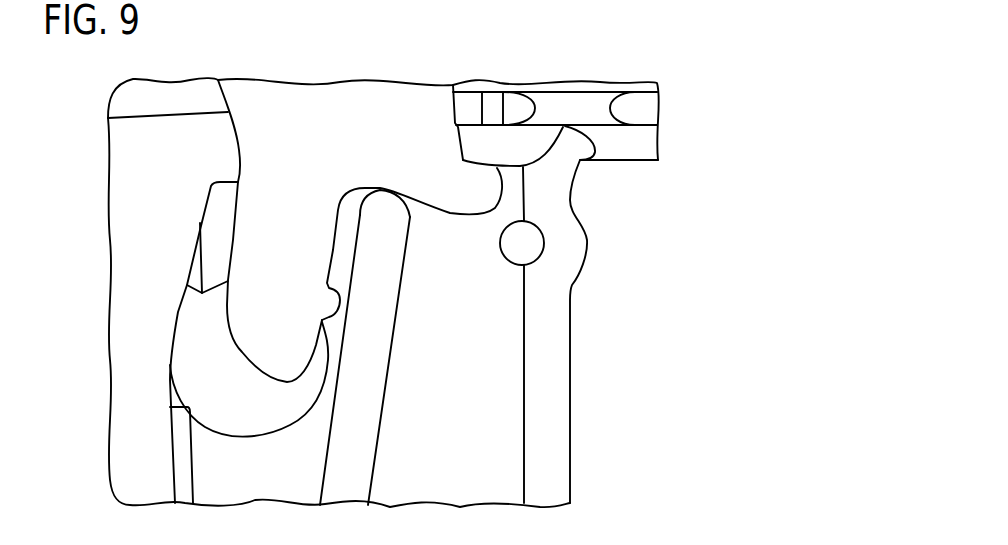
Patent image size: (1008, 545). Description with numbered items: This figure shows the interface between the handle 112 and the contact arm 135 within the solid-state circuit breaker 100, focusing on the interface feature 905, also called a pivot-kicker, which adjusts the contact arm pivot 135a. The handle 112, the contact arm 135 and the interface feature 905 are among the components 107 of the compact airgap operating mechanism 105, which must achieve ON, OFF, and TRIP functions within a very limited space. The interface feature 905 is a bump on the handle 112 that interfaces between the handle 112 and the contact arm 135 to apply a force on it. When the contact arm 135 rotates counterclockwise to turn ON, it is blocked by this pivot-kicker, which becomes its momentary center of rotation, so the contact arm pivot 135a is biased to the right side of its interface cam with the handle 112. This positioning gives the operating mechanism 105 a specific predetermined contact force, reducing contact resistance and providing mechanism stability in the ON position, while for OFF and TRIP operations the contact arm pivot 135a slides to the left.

The solid-state circuit breaker 100 is at (597, 48).
The compact airgap operating mechanism 105 is at (572, 314).
The components 107 is at (463, 335).
The handle 112 is at (320, 97).
The contact arm 135 is at (383, 322).
The contact arm pivot 135a is at (385, 189).
The interface feature 905 is at (327, 300).